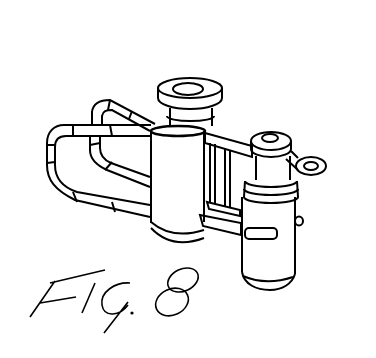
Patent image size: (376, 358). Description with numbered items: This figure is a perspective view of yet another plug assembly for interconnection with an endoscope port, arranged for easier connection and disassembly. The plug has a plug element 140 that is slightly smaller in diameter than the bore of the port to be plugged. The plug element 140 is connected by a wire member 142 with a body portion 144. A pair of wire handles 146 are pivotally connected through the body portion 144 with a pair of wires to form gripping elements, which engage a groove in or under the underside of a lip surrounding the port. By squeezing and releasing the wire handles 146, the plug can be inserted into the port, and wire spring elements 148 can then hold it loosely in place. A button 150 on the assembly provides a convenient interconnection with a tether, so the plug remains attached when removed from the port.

The plug element 140 is at (267, 264).
The wire member 142 is at (233, 132).
The body portion 144 is at (169, 204).
The wire handles 146 is at (70, 125).
The wire spring elements 148 is at (228, 235).
The button 150 is at (208, 90).